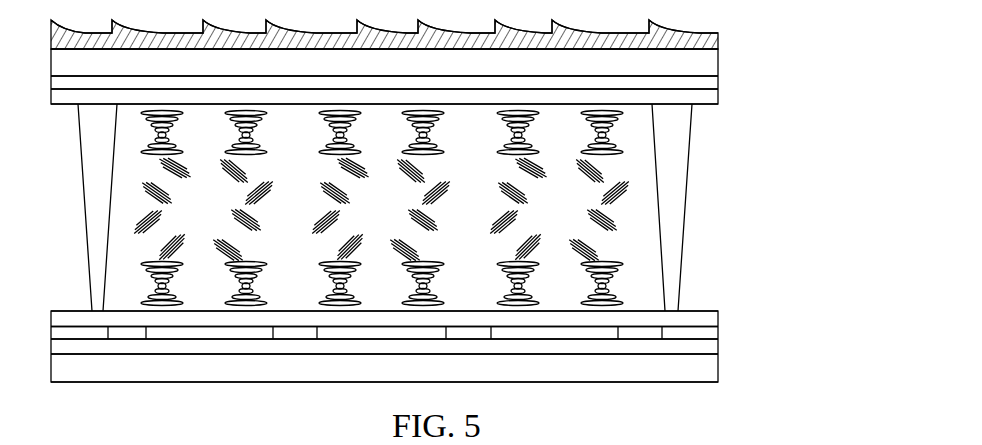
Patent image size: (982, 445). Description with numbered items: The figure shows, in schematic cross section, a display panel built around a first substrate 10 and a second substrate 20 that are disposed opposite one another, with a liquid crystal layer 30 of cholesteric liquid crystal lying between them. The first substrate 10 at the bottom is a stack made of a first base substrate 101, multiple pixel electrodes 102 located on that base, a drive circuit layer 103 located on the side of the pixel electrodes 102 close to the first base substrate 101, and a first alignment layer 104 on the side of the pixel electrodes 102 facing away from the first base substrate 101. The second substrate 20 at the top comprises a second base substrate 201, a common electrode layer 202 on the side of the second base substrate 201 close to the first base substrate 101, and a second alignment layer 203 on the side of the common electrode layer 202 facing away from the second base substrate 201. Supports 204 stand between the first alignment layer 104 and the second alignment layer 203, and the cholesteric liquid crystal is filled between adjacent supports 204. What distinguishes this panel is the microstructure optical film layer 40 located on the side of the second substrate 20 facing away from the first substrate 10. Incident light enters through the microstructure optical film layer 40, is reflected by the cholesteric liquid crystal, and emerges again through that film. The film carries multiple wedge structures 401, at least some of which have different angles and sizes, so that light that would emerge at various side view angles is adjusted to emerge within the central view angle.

The first substrate 10 is at (444, 346).
The first base substrate 101 is at (718, 368).
The pixel electrodes 102 is at (718, 333).
The drive circuit layer 103 is at (718, 347).
The first alignment layer 104 is at (718, 319).
The second substrate 20 is at (444, 78).
The second base substrate 201 is at (718, 61).
The common electrode layer 202 is at (718, 80).
The second alignment layer 203 is at (718, 97).
The supports 204 is at (91, 219).
The liquid crystal layer 30 is at (718, 110).
The microstructure optical film layer 40 is at (718, 40).
The wedge structures 401 is at (434, 35).